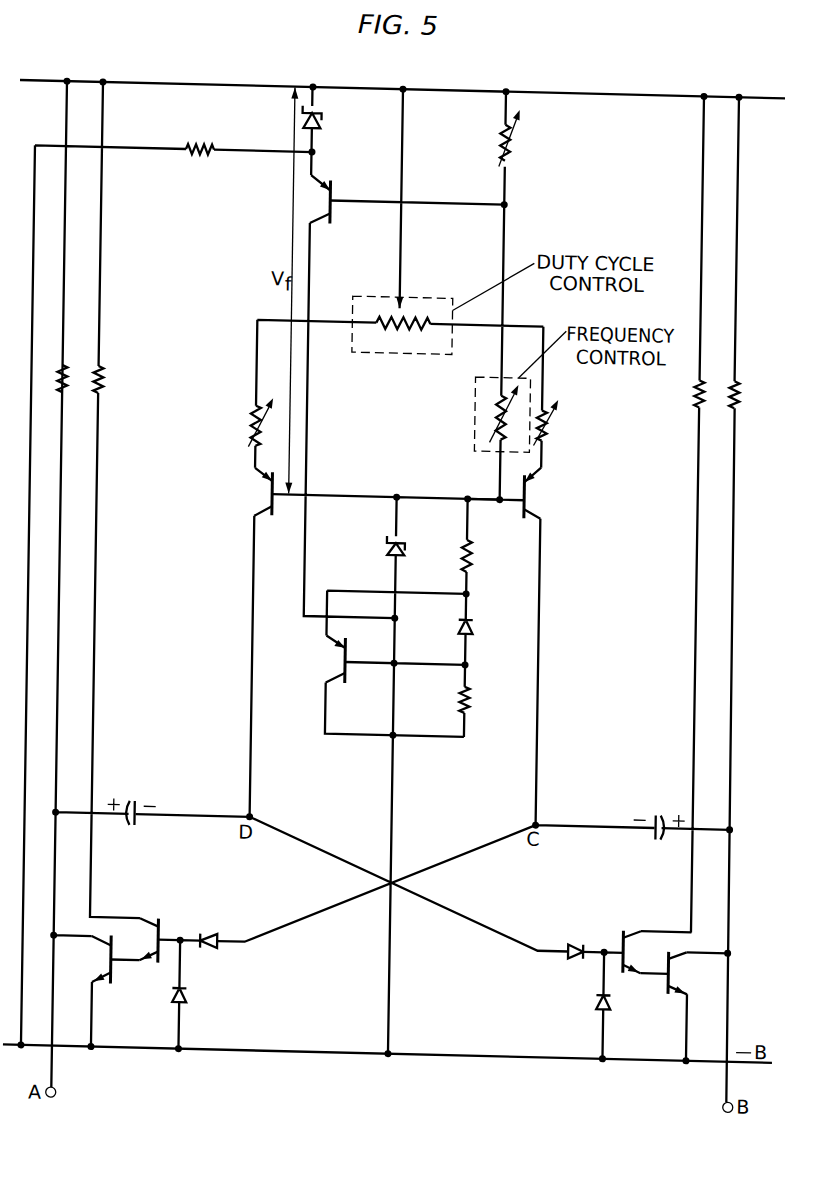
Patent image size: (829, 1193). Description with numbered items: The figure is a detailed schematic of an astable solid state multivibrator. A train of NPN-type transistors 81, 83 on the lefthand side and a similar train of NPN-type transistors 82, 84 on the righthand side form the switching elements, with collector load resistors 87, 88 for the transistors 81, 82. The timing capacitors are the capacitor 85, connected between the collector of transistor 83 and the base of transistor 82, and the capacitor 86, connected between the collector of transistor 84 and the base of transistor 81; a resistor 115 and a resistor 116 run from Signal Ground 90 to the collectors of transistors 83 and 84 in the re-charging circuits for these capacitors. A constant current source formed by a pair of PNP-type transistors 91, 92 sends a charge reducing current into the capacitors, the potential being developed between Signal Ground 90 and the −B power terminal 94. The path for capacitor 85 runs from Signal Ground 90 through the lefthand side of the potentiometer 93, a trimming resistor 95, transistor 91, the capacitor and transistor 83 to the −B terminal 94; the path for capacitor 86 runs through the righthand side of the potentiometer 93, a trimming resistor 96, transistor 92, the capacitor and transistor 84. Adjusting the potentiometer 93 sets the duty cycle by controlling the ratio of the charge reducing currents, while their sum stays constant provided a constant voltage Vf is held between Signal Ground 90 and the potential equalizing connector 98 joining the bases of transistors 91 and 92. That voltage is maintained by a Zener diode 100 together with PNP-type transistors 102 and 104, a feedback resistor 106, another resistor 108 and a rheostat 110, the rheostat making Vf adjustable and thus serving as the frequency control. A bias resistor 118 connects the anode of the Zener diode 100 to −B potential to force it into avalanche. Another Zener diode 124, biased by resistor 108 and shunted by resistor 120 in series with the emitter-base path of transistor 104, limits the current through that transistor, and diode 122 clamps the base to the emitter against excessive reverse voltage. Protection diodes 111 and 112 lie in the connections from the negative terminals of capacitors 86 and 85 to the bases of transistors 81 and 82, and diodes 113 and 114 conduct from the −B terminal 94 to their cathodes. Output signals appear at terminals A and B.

The Signal Ground 90 is at (202, 80).
The −B power terminal 94 is at (159, 1047).
The bias resistor 118 is at (203, 152).
The Zener diode 100 is at (324, 110).
The PNP-type transistor 102 is at (334, 183).
The feedback resistor 106 is at (514, 128).
The potentiometer 93 is at (405, 325).
The resistor 115 is at (74, 387).
The collector load resistor 87 is at (113, 380).
The collector load resistor 88 is at (699, 379).
The resistor 116 is at (749, 383).
The trimming resistor 95 is at (255, 415).
The rheostat 110 is at (493, 397).
The trimming resistor 96 is at (557, 424).
The PNP-type transistor 91 is at (275, 482).
The PNP-type transistor 92 is at (549, 489).
The potential equalizing connector 98 is at (489, 486).
The Zener diode 124 is at (392, 532).
The resistor 120 is at (483, 538).
The diode 122 is at (483, 616).
The PNP-type transistor 104 is at (353, 655).
The resistor 108 is at (482, 685).
The capacitor 85 is at (147, 799).
The capacitor 86 is at (674, 798).
The NPN-type transistor 81 is at (176, 931).
The NPN-type transistor 83 is at (127, 964).
The diode 111 is at (216, 940).
The diode 113 is at (202, 987).
The NPN-type transistor 82 is at (637, 925).
The NPN-type transistor 84 is at (682, 971).
The diode 112 is at (590, 930).
The diode 114 is at (609, 985).